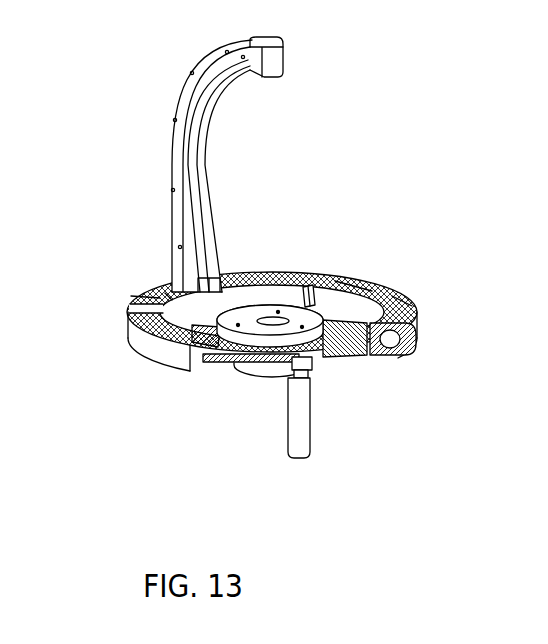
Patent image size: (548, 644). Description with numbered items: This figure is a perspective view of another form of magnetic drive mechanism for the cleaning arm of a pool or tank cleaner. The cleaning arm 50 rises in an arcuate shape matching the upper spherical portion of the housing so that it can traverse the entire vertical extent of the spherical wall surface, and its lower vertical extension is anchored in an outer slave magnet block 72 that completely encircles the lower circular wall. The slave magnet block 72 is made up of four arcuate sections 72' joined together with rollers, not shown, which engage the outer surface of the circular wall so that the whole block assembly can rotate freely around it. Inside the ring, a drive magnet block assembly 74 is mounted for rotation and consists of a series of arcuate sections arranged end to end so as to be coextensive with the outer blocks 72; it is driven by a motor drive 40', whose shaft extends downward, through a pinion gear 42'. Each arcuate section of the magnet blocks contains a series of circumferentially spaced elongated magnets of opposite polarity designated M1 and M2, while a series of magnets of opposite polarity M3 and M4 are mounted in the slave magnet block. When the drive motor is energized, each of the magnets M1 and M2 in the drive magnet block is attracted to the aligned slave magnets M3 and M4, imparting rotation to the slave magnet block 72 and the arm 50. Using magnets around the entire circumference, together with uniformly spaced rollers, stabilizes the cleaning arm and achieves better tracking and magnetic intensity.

The cleaning arm 50 is at (170, 144).
The outer slave magnet block 72 is at (225, 305).
The arcuate section 72' is at (278, 340).
The drive magnet block assembly 74 is at (320, 287).
The pinion gear 42' is at (355, 376).
The motor drive 40' is at (343, 418).
The magnet M1 is at (412, 300).
The magnet M2 is at (380, 288).
The magnet M3 is at (168, 292).
The magnet M4 is at (131, 291).